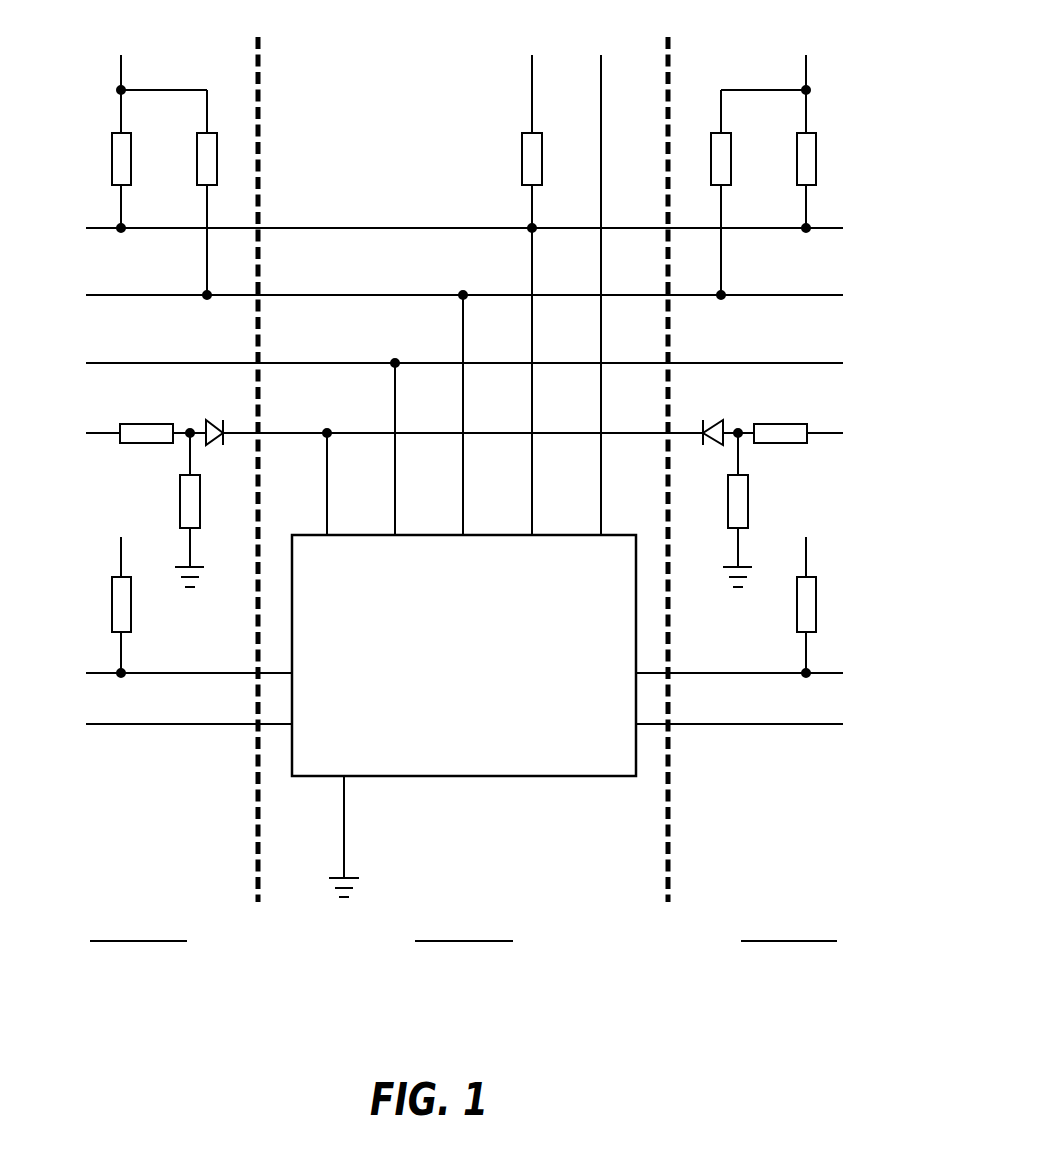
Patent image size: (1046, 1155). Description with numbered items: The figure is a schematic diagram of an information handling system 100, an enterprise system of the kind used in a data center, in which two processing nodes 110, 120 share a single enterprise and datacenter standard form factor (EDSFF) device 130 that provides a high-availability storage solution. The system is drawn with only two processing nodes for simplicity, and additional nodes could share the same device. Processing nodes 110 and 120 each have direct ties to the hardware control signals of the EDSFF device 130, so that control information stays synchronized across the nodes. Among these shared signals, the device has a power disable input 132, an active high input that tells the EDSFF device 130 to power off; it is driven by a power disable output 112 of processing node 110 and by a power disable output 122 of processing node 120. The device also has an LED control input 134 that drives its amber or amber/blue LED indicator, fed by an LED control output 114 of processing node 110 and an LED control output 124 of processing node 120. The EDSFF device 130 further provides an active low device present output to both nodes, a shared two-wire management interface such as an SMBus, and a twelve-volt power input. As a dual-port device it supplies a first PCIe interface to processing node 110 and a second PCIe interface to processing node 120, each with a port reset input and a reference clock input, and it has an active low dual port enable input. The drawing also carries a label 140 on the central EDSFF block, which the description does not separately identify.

The information handling system 100 is at (87, 1044).
The processing node 110 is at (112, 977).
The power disable output 112 is at (130, 363).
The LED control output 114 is at (130, 424).
The processing node 120 is at (765, 977).
The power disable output 122 is at (767, 363).
The LED control output 124 is at (767, 424).
The enterprise and datacenter standard form factor (EDSFF) device 130 is at (440, 977).
The power disable input 132 is at (291, 363).
The LED control input 134 is at (291, 432).
The Enterprise and Data Center Standard Form Factor (EDSFF) device 140 is at (295, 534).